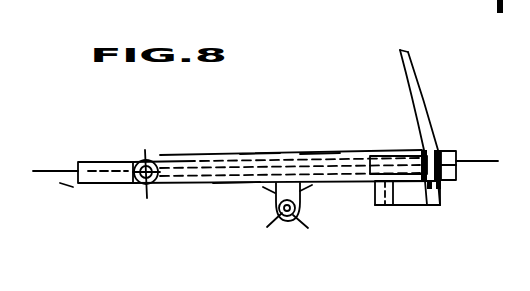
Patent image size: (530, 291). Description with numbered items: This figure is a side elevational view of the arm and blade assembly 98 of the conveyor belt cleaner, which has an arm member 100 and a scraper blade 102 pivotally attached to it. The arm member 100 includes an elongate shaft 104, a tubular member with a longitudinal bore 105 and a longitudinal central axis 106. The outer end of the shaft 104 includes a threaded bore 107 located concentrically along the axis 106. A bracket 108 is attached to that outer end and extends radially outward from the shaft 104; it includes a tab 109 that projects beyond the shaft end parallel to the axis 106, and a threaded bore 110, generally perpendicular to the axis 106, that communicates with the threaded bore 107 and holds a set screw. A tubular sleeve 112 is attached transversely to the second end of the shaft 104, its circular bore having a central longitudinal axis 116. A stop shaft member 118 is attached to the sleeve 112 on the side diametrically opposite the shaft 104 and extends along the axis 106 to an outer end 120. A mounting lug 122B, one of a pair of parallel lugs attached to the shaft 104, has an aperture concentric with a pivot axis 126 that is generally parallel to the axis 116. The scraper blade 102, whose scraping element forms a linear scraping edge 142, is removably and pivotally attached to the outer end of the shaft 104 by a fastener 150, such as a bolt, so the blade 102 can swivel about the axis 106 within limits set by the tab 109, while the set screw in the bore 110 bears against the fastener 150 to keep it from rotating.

The arm and blade assembly 98 is at (318, 86).
The arm member 100 is at (207, 150).
The scraper blade 102 is at (435, 100).
The elongate shaft 104 is at (326, 150).
The longitudinal bore 105 is at (213, 185).
The longitudinal central axis 106 is at (62, 170).
The threaded bore 107 is at (393, 150).
The bracket 108 is at (410, 206).
The tab 109 is at (442, 188).
The threaded bore 110 is at (368, 190).
The tubular sleeve 112 is at (138, 183).
The central longitudinal axis 116 is at (145, 152).
The stop shaft member 118 is at (100, 184).
The outer end 120 is at (78, 182).
The mounting lug 122B is at (272, 205).
The pivot axis 126 is at (281, 232).
The scraping edge 142 is at (400, 50).
The fastener 150 is at (442, 150).